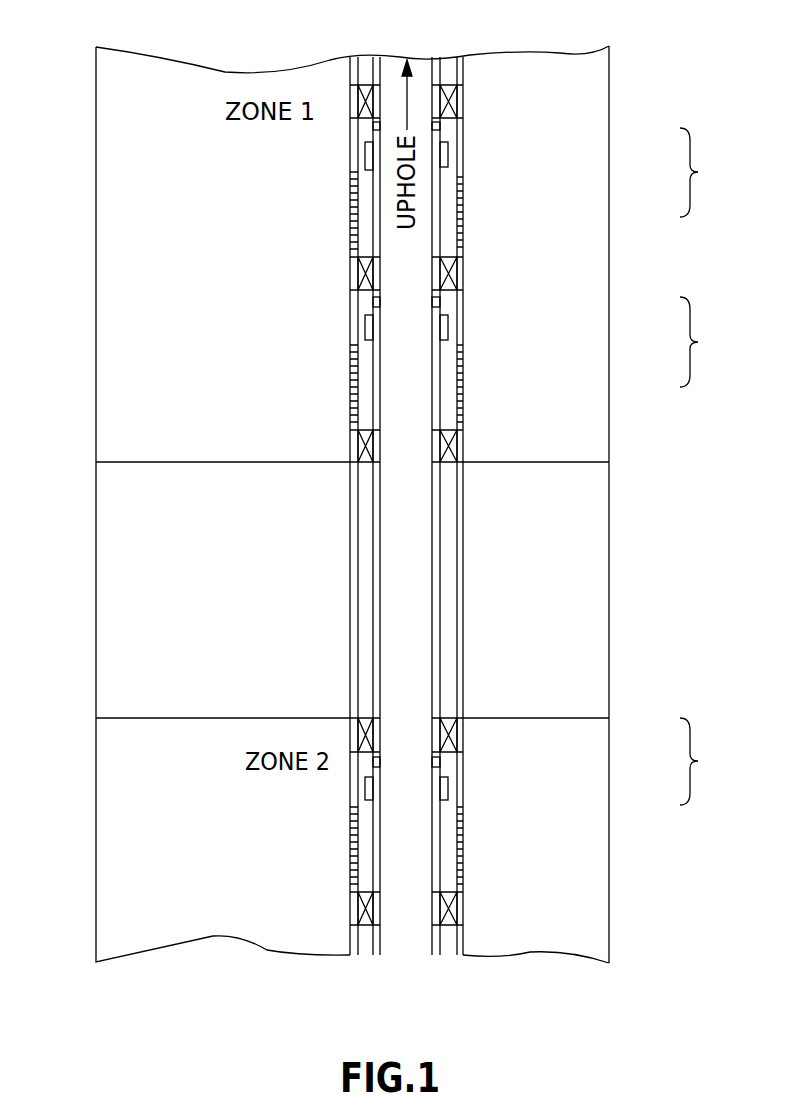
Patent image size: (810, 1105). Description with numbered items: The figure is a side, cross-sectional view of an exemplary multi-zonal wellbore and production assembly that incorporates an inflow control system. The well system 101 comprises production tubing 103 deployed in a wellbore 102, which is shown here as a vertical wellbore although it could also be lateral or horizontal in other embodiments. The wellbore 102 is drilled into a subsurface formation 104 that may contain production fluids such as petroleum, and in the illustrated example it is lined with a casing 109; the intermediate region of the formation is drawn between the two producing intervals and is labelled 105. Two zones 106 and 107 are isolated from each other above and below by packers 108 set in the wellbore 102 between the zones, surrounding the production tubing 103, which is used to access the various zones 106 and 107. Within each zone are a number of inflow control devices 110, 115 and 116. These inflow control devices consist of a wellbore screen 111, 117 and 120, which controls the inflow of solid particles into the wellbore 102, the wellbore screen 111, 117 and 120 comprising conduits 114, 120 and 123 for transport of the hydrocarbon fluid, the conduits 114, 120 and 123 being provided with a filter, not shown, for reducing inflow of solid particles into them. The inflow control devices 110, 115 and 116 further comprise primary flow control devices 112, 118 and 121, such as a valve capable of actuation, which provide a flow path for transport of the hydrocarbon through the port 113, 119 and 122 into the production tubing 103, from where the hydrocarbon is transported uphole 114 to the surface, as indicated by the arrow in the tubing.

The well system 101 is at (478, 58).
The wellbore 102 is at (460, 100).
The production tubing 103 is at (440, 497).
The subsurface formation 104 is at (145, 305).
The intermediate formation 105 is at (160, 595).
The zone 106 is at (312, 67).
The zone 107 is at (290, 820).
The packer 108 is at (450, 730).
The casing 109 is at (466, 540).
The inflow control device 110 is at (548, 359).
The wellbore screen 111 is at (463, 362).
The primary flow control device 112 is at (448, 328).
The port 113 is at (440, 300).
The conduit 114 is at (420, 68).
The inflow control device 115 is at (548, 801).
The inflow control device 116 is at (555, 568).
The wellbore screen 117 is at (463, 825).
The primary flow control device 118 is at (448, 787).
The port 119 is at (440, 762).
The wellbore screen 120 is at (463, 190).
The primary flow control device 121 is at (448, 157).
The port 122 is at (440, 137).
The conduit 123 is at (463, 222).